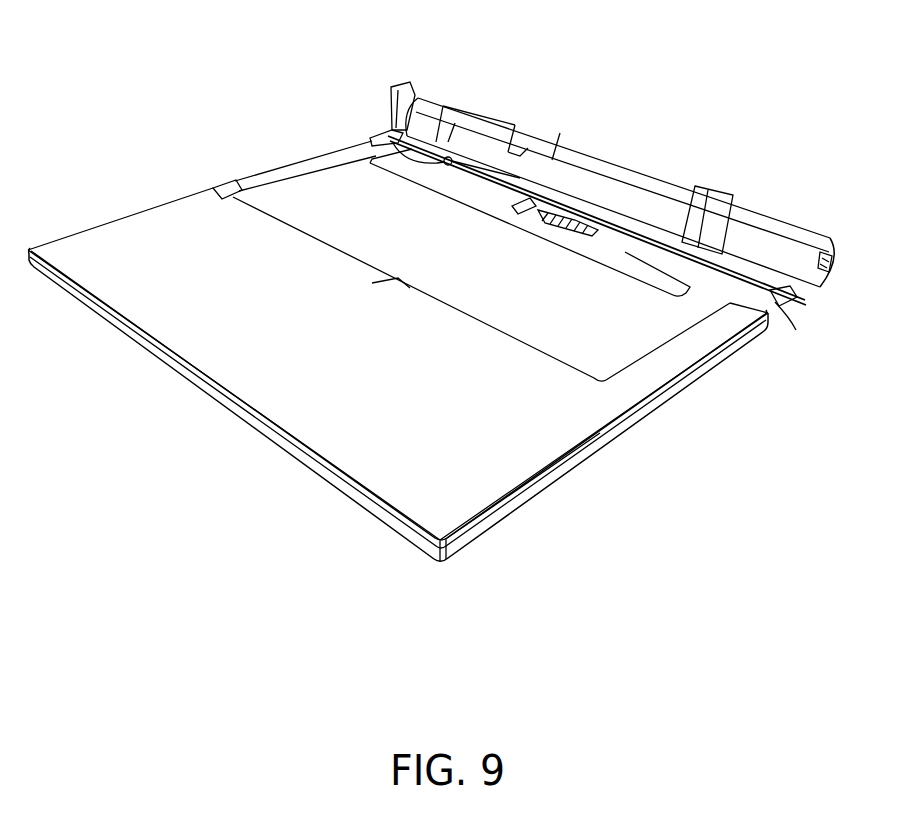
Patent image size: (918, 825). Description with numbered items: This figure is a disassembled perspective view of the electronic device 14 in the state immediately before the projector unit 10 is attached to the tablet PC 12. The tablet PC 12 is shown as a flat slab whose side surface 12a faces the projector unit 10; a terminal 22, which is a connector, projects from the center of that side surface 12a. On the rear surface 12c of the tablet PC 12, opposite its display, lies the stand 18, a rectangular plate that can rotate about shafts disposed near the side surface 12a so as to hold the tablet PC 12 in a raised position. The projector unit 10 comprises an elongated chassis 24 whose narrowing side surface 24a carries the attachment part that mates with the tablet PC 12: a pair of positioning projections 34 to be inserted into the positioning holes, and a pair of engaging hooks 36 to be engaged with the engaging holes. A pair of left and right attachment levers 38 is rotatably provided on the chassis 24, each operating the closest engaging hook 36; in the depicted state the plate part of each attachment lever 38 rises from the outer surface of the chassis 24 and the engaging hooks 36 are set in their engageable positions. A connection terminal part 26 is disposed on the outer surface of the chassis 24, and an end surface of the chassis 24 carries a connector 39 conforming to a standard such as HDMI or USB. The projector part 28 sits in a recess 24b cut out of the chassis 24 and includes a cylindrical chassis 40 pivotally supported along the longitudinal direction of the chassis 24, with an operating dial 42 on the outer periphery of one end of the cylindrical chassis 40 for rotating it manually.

The electronic device 14 is at (133, 64).
The projector unit 10 is at (579, 133).
The tablet PC 12 is at (588, 470).
The side surface 12a is at (612, 243).
The rear surface 12c is at (487, 488).
The stand 18 is at (600, 380).
The terminal 22 is at (520, 208).
The chassis 24 is at (660, 203).
The side surface 24a is at (522, 118).
The recess 24b is at (455, 123).
The connection terminal part 26 is at (573, 193).
The projector part 28 is at (540, 120).
The positioning projections 34 is at (380, 136).
The engaging hooks 36 is at (377, 140).
The attachment levers 38 is at (402, 90).
The connector 39 is at (827, 273).
The cylindrical chassis 40 is at (470, 120).
The operating dial 42 is at (420, 98).